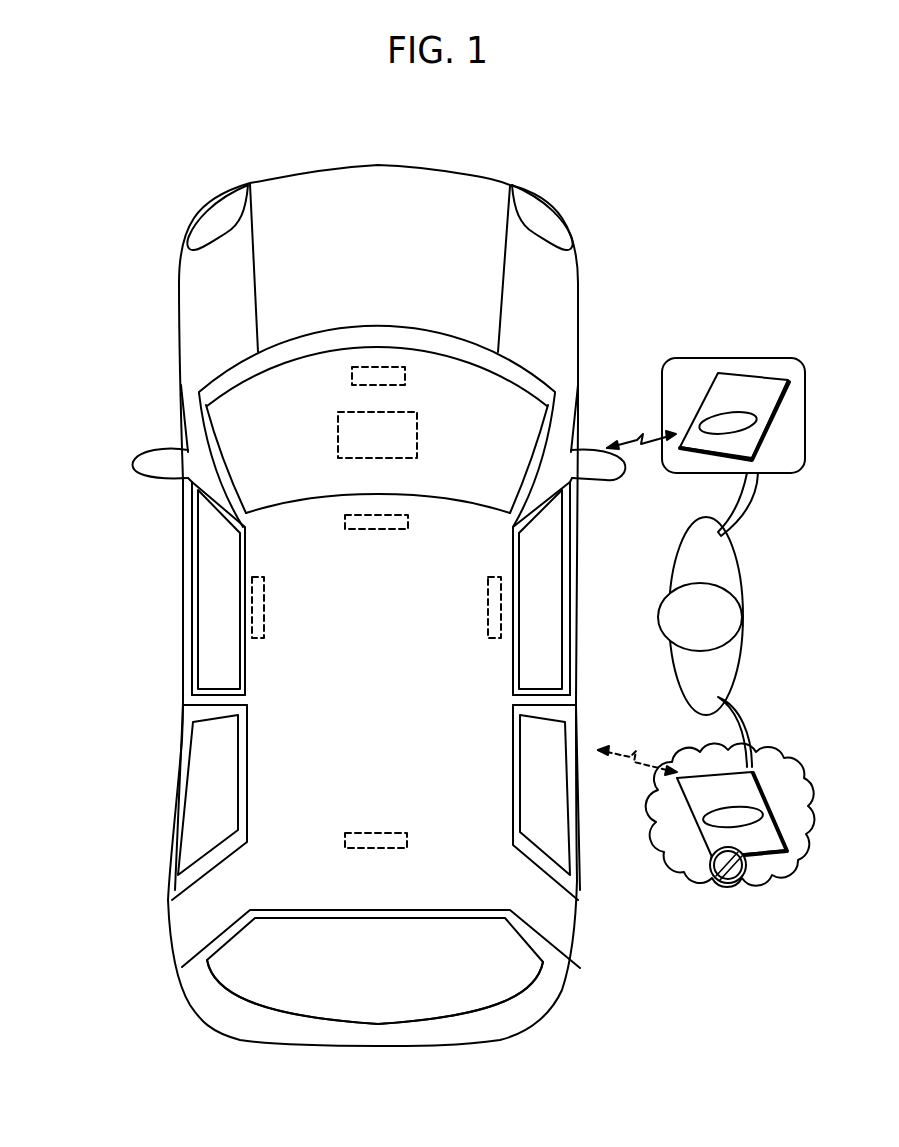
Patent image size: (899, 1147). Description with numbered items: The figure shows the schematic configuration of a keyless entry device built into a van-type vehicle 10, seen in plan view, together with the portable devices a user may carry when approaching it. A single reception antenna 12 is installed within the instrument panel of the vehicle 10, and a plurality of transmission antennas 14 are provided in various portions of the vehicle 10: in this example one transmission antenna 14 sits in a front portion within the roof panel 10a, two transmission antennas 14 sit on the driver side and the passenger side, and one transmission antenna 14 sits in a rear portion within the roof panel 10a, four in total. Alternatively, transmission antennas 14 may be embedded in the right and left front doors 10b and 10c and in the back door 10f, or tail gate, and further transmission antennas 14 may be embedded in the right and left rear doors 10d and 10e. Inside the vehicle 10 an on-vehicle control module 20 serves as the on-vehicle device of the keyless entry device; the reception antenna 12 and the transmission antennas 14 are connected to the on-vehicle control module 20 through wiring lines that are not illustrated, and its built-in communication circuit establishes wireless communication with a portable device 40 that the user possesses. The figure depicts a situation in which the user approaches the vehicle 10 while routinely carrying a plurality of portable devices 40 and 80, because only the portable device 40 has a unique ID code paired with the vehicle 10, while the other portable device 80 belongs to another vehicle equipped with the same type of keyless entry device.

The vehicle 10 is at (174, 978).
The roof panel 10a is at (285, 713).
The right front door 10b is at (568, 498).
The left front door 10c is at (188, 660).
The right rear door 10d is at (570, 770).
The left rear door 10e is at (179, 790).
The back door 10f is at (440, 1032).
The reception antenna 12 is at (388, 367).
The transmission antennas 14 is at (345, 518).
The on-vehicle control module 20 is at (417, 440).
The portable device 40 is at (748, 385).
The portable device 80 is at (757, 792).